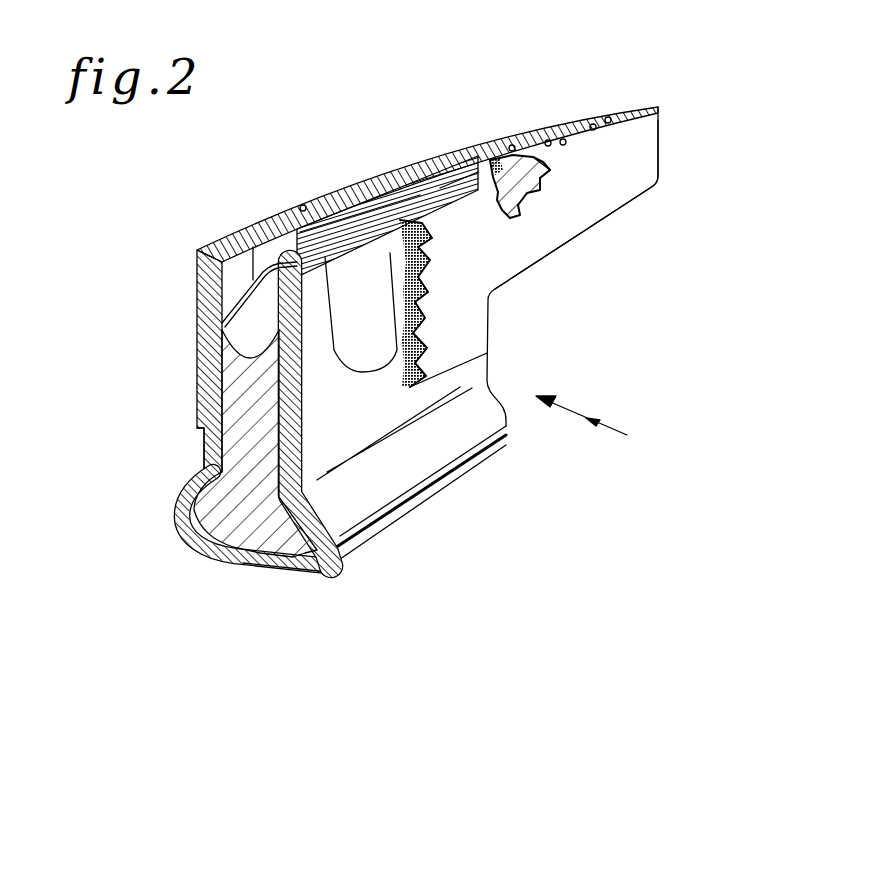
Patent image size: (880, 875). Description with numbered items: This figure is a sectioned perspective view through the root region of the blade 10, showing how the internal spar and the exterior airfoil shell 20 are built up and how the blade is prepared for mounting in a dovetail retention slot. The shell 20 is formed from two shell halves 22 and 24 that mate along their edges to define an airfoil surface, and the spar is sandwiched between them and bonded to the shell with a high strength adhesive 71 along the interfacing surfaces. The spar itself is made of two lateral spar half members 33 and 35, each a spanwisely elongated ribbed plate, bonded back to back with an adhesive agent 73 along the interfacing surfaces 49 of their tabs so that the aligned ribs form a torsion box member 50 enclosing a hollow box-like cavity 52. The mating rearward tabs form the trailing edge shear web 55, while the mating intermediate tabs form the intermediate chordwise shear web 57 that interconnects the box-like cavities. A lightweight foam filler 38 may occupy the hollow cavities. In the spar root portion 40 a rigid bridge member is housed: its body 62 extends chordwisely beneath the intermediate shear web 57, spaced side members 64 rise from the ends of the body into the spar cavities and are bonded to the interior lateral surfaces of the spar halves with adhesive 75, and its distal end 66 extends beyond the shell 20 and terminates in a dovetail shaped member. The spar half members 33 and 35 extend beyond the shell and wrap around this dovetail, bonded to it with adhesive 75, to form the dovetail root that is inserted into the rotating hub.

The blade 10 is at (599, 424).
The exterior airfoil shell 20 is at (660, 143).
The shell half 22 is at (578, 122).
The shell half 24 is at (630, 183).
The spar half member 33 is at (204, 447).
The spar half member 35 is at (300, 450).
The lightweight foam filler 38 is at (560, 125).
The spar root portion 40 is at (403, 480).
The interfacing surfaces 49 is at (492, 145).
The torsion box member 50 is at (380, 168).
The box-like cavity 52 is at (437, 158).
The trailing edge shear web 55 is at (513, 213).
The intermediate chordwise shear web 57 is at (293, 211).
The body 62 is at (192, 483).
The side member 64 is at (200, 373).
The distal end 66 is at (262, 563).
The adhesive 71 is at (433, 273).
The adhesive agent 73 is at (550, 175).
The adhesive 75 is at (247, 379).